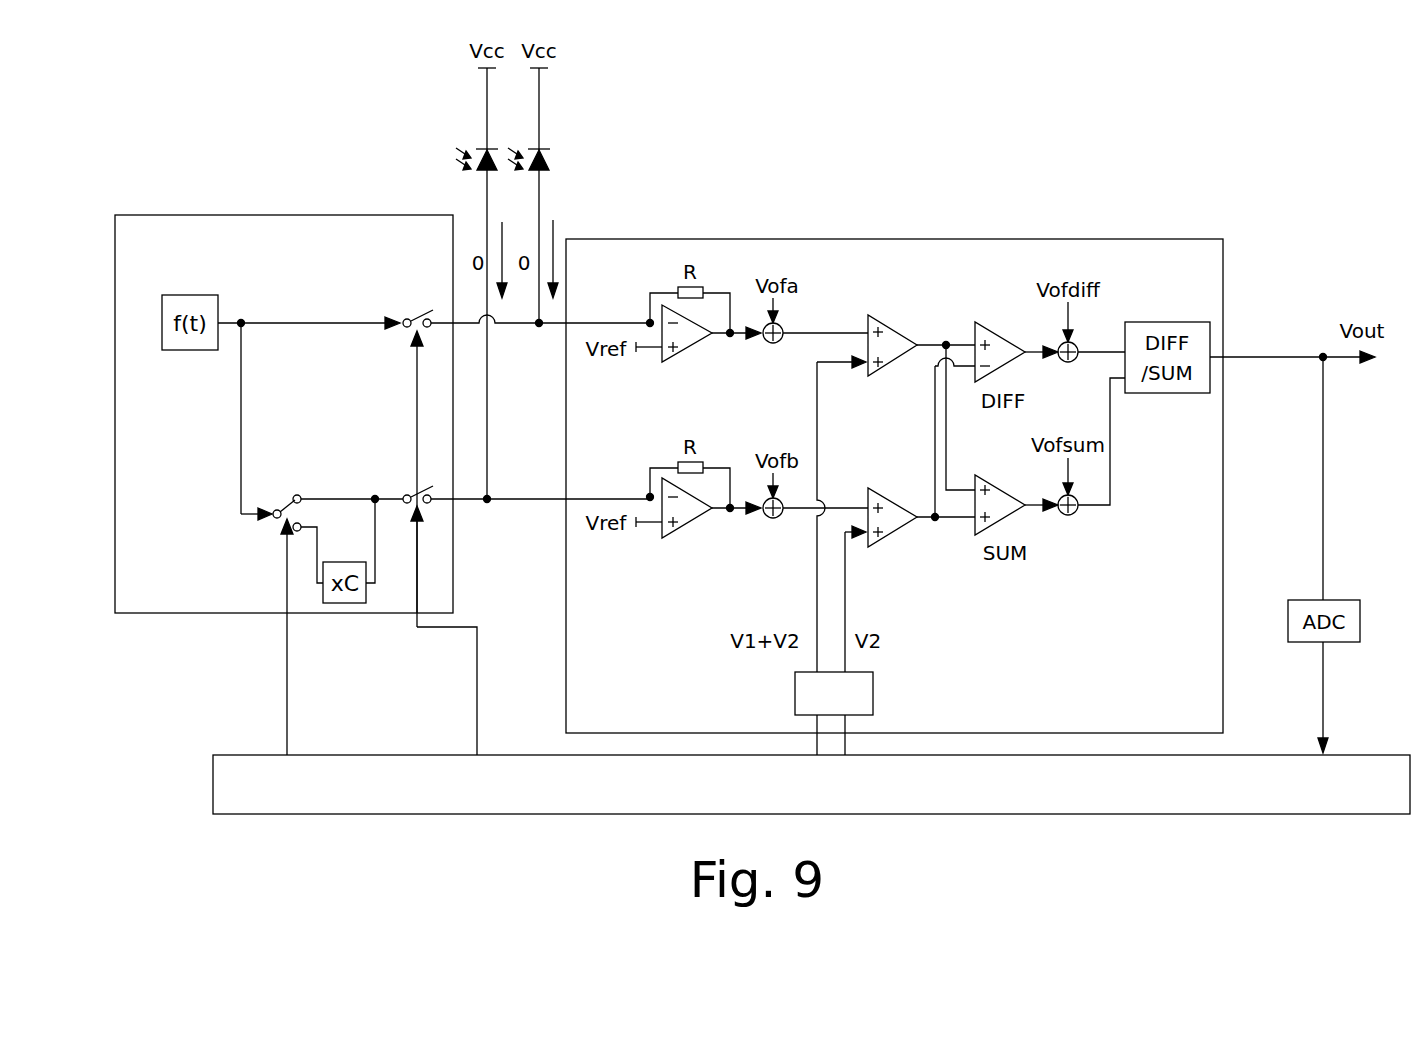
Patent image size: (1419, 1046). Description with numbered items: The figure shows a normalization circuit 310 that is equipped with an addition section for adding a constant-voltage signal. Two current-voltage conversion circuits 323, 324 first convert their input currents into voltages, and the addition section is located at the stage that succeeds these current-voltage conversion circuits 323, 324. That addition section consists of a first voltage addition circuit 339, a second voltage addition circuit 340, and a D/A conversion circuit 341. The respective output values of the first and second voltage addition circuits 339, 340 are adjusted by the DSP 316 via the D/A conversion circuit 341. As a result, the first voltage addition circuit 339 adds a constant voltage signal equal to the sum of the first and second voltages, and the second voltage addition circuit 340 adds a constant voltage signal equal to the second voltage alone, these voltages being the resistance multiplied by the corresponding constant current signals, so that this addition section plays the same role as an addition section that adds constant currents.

The normalization circuit 310 is at (993, 239).
The DSP 316 is at (1040, 814).
The current-voltage conversion circuit 323 is at (688, 362).
The current-voltage conversion circuit 324 is at (688, 538).
The first voltage addition circuit 339 is at (888, 320).
The second voltage addition circuit 340 is at (888, 490).
The D/A conversion circuit 341 is at (873, 690).